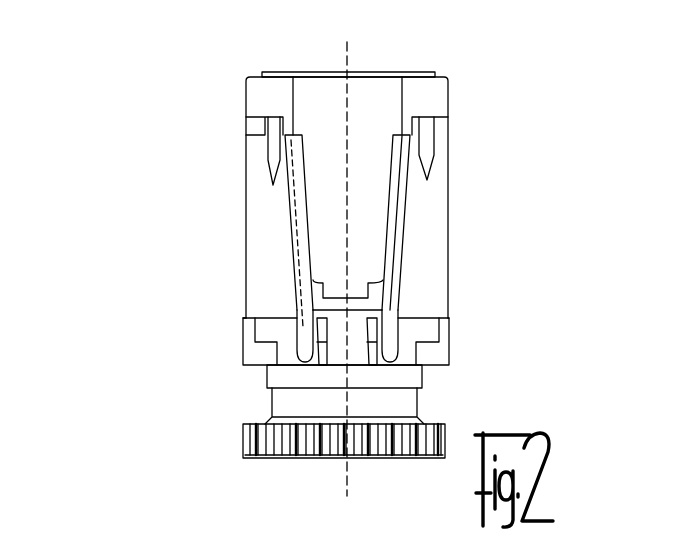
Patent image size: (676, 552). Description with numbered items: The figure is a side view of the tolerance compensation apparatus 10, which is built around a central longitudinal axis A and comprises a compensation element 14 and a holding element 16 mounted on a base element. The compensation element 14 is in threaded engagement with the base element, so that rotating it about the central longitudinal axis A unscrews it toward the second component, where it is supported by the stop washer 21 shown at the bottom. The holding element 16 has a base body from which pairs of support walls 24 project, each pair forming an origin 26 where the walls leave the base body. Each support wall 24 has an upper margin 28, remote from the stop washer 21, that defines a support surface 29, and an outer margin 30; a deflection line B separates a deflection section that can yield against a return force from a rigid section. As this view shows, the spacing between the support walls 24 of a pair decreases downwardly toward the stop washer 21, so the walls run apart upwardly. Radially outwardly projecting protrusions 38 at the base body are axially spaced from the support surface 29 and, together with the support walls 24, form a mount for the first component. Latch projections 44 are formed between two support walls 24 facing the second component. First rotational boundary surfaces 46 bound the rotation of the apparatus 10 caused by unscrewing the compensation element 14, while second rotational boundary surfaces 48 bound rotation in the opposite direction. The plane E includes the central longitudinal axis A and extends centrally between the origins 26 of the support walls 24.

The apparatus 10 is at (158, 232).
The compensation element 14 is at (419, 401).
The holding element 16 is at (449, 238).
The stop washer 21 is at (256, 444).
The support walls 24 is at (400, 202).
The origin 26 is at (392, 150).
The upper margin 28 is at (413, 135).
The support surface 29 is at (288, 134).
The outer margin 30 is at (396, 258).
The protrusions 38 is at (256, 95).
The latch projections 44 is at (335, 350).
The first rotational boundary surfaces 46 is at (285, 155).
The second rotational boundary surfaces 48 is at (247, 134).
The central longitudinal axis A is at (349, 52).
The deflection line B is at (300, 234).
The plane E is at (345, 493).